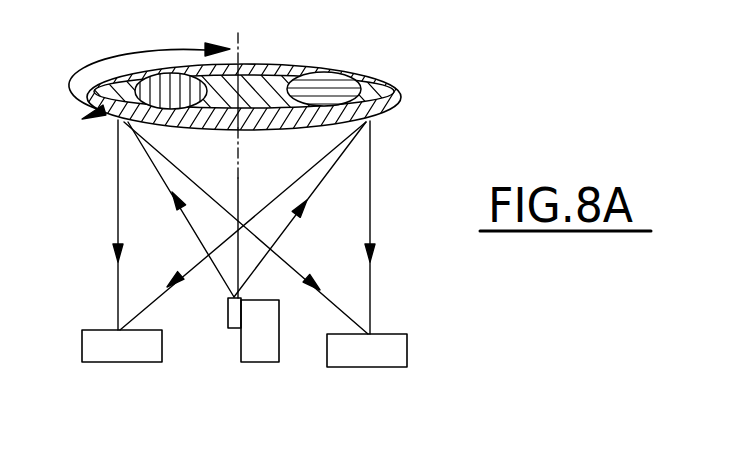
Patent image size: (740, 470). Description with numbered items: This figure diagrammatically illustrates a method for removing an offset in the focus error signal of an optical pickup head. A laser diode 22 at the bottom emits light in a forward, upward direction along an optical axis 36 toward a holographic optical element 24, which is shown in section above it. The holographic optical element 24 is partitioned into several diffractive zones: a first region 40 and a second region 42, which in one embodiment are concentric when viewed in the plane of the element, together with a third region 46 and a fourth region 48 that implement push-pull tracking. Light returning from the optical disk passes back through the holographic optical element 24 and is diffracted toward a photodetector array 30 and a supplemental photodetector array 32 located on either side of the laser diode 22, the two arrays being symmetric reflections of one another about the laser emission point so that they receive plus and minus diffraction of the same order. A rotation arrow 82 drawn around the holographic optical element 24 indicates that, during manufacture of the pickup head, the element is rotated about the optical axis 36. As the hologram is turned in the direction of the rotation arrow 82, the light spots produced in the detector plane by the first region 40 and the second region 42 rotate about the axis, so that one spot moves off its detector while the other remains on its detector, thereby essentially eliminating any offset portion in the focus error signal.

The laser diode 22 is at (228, 317).
The holographic optical element 24 is at (270, 87).
The photodetector array 30 is at (82, 336).
The supplemental photodetector array 32 is at (407, 340).
The optical axis 36 is at (240, 48).
The first region 40 is at (399, 92).
The second region 42 is at (276, 108).
The third region 46 is at (168, 80).
The fourth region 48 is at (330, 83).
The rotation arrow 82 is at (108, 60).